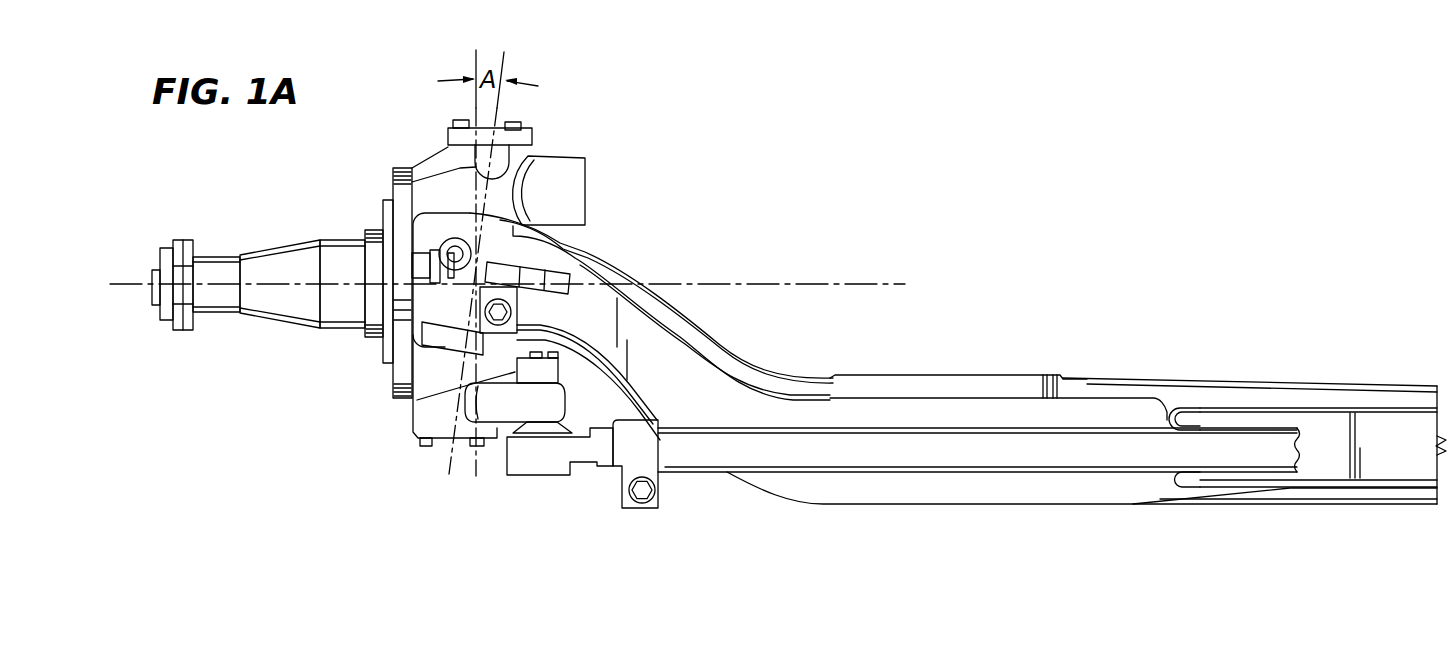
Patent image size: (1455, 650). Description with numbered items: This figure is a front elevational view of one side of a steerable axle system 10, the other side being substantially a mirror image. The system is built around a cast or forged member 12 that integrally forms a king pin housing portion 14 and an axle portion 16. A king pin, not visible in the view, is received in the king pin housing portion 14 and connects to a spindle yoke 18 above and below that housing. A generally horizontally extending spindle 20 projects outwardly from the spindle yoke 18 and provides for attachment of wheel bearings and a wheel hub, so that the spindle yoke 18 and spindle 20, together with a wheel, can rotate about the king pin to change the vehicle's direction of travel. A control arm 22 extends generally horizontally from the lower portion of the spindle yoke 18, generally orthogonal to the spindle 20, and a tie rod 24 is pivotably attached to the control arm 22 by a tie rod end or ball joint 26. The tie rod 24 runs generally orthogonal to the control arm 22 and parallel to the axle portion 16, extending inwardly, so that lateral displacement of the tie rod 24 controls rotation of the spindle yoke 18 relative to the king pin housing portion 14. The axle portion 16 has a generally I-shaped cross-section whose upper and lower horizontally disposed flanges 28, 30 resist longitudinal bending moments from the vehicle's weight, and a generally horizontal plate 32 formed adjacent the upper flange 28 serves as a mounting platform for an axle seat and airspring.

The steerable axle system 10 is at (1066, 202).
The cast or forged member 12 is at (856, 509).
The king pin housing portion 14 is at (577, 243).
The axle portion 16 is at (1312, 385).
The spindle yoke 18 is at (432, 162).
The spindle 20 is at (275, 248).
The control arm 22 is at (565, 403).
The tie rod 24 is at (982, 433).
The tie rod end or ball joint 26 is at (550, 473).
The upper flange 28 is at (1428, 413).
The lower flange 30 is at (1295, 506).
The plate 32 is at (945, 377).